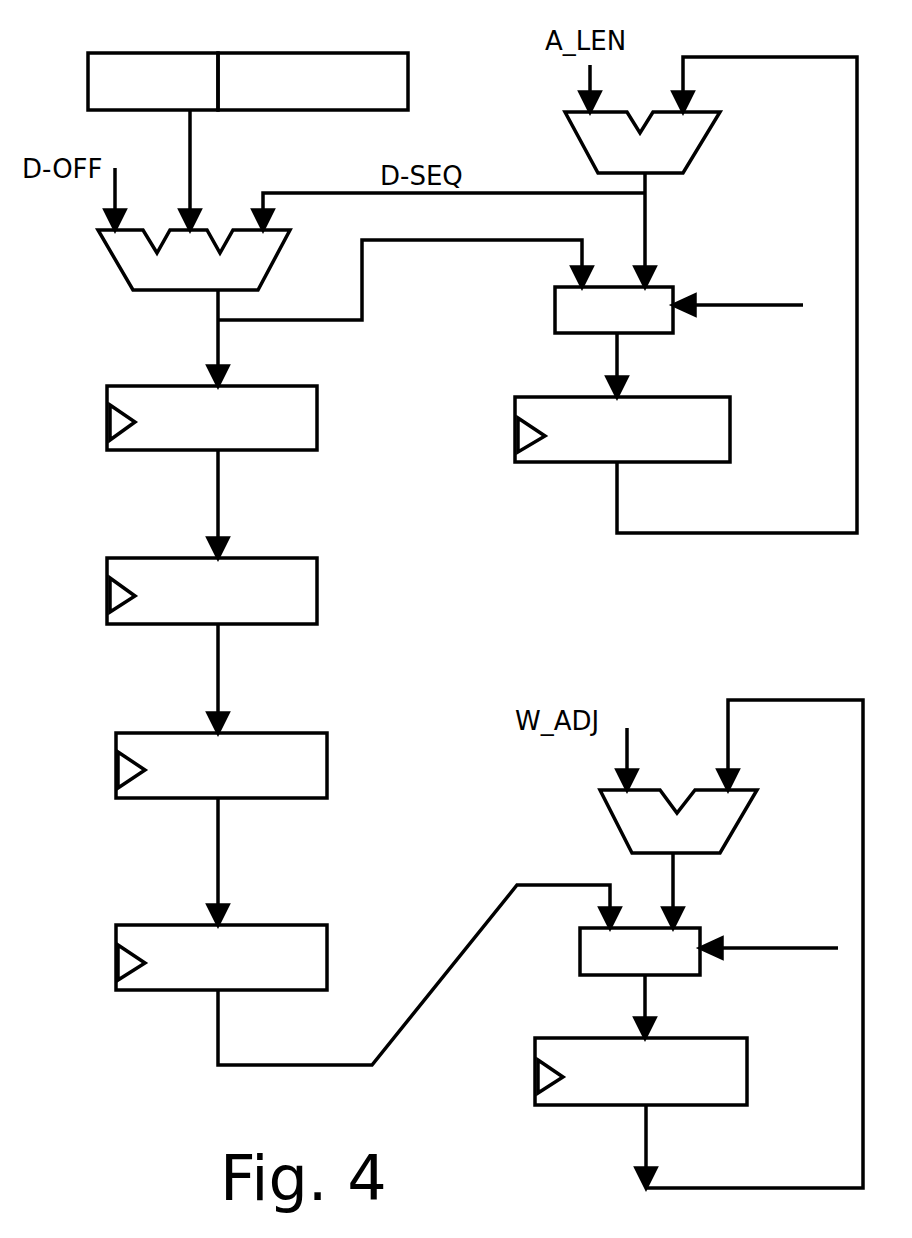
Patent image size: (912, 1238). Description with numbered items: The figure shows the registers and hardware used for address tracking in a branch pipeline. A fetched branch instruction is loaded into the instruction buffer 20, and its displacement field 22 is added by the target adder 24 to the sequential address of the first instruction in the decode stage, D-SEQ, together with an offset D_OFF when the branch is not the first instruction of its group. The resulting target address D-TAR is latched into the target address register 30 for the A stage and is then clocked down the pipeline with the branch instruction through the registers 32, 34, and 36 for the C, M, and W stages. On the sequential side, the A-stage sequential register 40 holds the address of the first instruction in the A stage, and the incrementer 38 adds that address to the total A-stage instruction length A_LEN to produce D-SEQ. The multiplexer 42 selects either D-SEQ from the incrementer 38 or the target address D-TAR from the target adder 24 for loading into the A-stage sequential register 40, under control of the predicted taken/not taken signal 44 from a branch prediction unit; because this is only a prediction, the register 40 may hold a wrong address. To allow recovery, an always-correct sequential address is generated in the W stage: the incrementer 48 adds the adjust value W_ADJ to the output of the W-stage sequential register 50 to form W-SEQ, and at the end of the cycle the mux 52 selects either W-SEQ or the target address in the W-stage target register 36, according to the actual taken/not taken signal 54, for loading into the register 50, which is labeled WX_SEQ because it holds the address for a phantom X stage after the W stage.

The instruction buffer 20 is at (408, 79).
The displacement field 22 is at (166, 53).
The target adder 24 is at (172, 291).
The target address register 30 is at (100, 430).
The C-stage target register 32 is at (105, 566).
The M-stage target register 34 is at (112, 740).
The W-stage target register 36 is at (112, 952).
The incrementer 38 is at (712, 137).
The A-stage sequential register 40 is at (572, 462).
The multiplexer 42 is at (555, 328).
The predicted taken/not taken signal 44 is at (740, 307).
The incrementer 48 is at (620, 828).
The W-stage sequential register 50 is at (535, 1083).
The mux 52 is at (580, 948).
The actual taken/not taken signal 54 is at (790, 950).